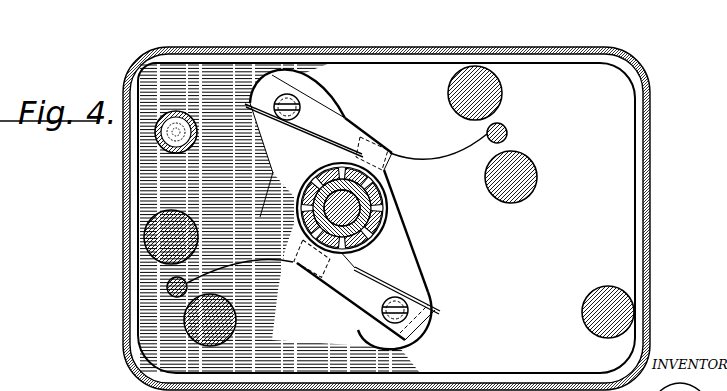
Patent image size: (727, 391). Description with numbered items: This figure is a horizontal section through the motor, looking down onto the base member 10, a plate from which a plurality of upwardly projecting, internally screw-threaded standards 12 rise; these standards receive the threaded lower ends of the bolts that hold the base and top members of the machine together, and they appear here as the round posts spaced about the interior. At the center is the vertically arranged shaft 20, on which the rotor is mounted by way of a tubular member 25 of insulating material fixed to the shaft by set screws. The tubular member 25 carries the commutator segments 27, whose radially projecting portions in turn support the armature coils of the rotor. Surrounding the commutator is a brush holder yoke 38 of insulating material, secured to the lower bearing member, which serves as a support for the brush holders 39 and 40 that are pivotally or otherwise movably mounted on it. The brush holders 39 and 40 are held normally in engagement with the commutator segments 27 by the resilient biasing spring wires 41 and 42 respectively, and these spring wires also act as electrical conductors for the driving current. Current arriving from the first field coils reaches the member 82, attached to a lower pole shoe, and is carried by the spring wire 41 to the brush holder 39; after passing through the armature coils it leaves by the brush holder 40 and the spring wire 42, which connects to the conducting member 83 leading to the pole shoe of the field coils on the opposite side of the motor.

The base member 10 is at (617, 210).
The standards 12 is at (150, 233).
The shaft 20 is at (388, 192).
The tubular member 25 is at (387, 222).
The commutator segments 27 is at (297, 207).
The brush holder yoke 38 is at (415, 277).
The brush holder 39 is at (338, 117).
The brush holder 40 is at (345, 290).
The spring wire 41 is at (415, 155).
The spring wire 42 is at (253, 262).
The member 82 is at (506, 128).
The conducting member 83 is at (168, 289).